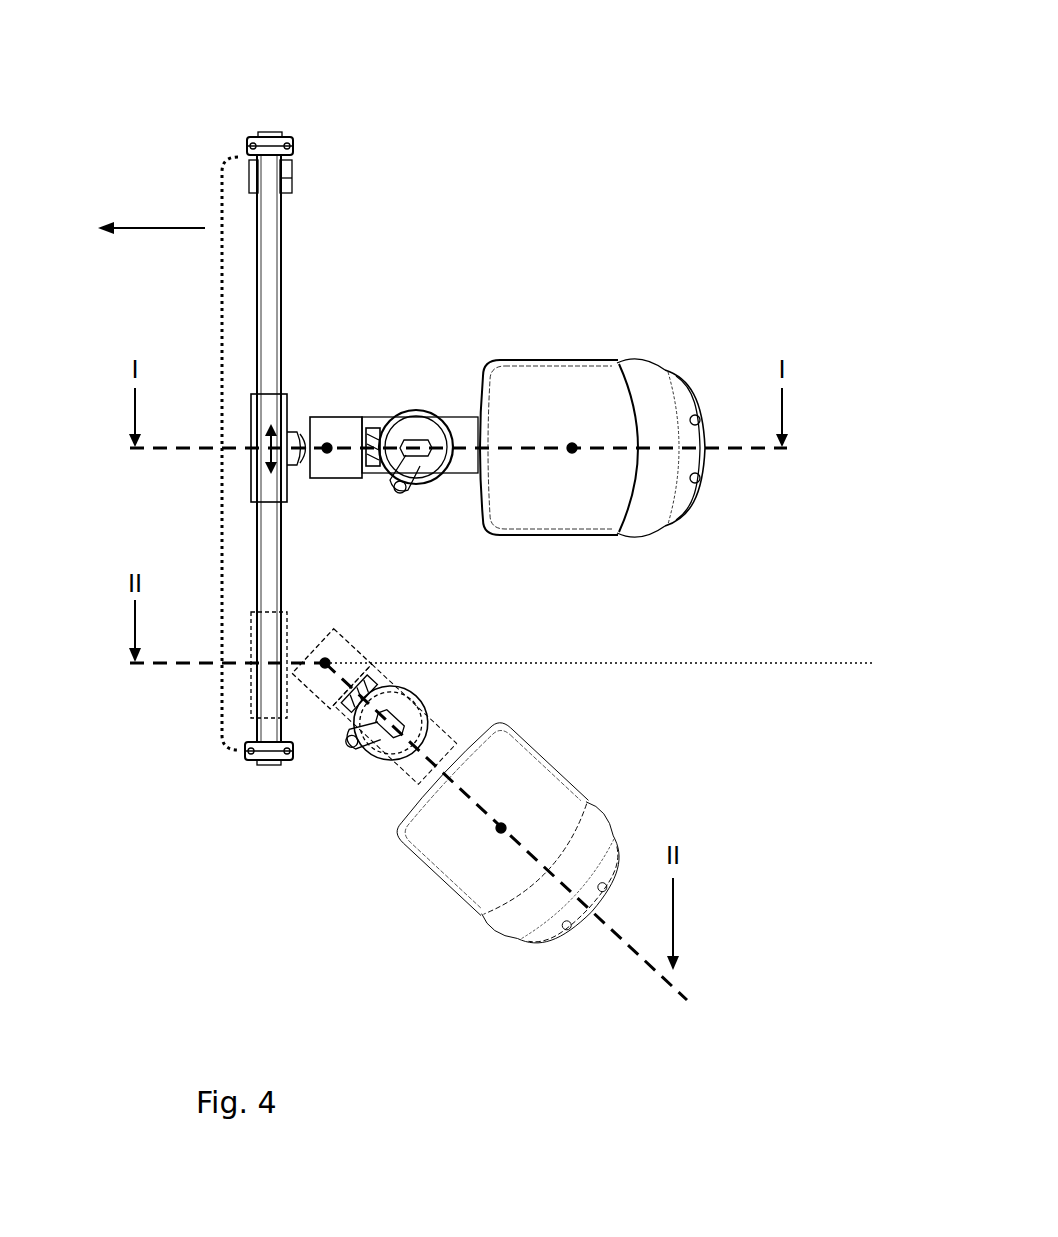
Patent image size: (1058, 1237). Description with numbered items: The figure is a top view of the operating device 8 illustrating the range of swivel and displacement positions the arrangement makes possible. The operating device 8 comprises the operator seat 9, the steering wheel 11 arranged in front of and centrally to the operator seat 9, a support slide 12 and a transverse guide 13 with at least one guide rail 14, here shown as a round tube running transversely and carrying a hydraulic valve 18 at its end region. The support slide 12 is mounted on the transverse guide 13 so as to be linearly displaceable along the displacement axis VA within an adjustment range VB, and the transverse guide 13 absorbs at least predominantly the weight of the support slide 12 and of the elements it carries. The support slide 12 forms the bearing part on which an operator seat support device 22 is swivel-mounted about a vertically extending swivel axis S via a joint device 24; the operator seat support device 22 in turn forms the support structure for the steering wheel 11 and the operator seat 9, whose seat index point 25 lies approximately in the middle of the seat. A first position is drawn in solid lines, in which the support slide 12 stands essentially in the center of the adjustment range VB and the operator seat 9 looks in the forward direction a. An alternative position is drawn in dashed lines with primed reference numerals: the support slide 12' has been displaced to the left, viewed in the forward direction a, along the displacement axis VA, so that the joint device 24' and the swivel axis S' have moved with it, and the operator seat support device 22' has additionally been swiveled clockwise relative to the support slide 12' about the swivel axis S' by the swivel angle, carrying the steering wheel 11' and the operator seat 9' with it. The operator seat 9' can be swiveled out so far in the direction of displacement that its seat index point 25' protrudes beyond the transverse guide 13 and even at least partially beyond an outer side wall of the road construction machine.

The operating device 8 is at (552, 139).
The operator seat 9 is at (617, 430).
The operator seat 9' is at (540, 842).
The steering wheel 11 is at (403, 404).
The steering wheel 11' is at (412, 682).
The support slide 12 is at (240, 424).
The support slide 12' is at (229, 639).
The transverse guide 13 is at (273, 203).
The guide rail 14 is at (273, 203).
The hydraulic valve 18 is at (251, 178).
The operator seat support device 22 is at (420, 399).
The operator seat support device 22' is at (436, 724).
The joint device 24 is at (344, 488).
The joint device 24' is at (332, 722).
The seat index point 25 is at (590, 370).
The seat index point 25' is at (404, 879).
The swivel axis S is at (320, 374).
The swivel axis S' is at (317, 590).
The displacement axis VA is at (268, 452).
The adjustment range VB is at (215, 283).
The forward direction a is at (135, 230).